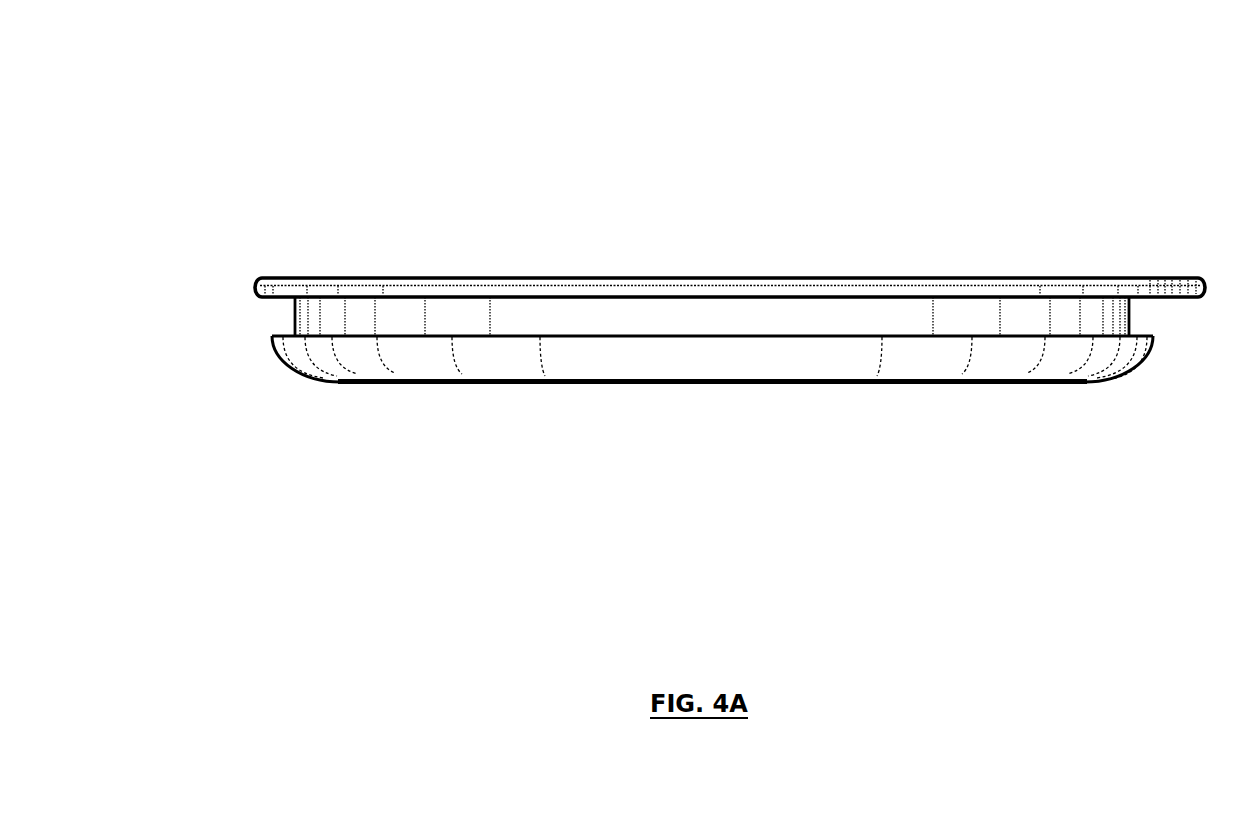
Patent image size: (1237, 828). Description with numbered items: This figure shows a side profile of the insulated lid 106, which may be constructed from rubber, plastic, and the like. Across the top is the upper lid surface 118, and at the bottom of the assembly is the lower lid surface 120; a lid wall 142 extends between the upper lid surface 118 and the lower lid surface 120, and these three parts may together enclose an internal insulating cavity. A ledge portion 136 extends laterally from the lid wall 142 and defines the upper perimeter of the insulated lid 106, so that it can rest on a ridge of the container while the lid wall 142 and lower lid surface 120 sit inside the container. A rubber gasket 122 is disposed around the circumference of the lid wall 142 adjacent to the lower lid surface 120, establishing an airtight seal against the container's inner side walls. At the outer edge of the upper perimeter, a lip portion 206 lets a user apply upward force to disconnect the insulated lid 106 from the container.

The insulated lid 106 is at (255, 79).
The upper lid surface 118 is at (813, 280).
The lip portion 206 is at (1192, 283).
The ledge portion 136 is at (262, 298).
The lid wall 142 is at (1123, 320).
The rubber gasket 122 is at (297, 368).
The lower lid surface 120 is at (592, 383).